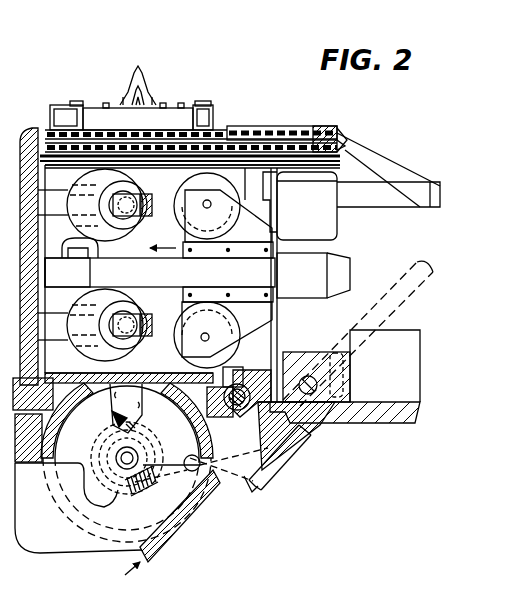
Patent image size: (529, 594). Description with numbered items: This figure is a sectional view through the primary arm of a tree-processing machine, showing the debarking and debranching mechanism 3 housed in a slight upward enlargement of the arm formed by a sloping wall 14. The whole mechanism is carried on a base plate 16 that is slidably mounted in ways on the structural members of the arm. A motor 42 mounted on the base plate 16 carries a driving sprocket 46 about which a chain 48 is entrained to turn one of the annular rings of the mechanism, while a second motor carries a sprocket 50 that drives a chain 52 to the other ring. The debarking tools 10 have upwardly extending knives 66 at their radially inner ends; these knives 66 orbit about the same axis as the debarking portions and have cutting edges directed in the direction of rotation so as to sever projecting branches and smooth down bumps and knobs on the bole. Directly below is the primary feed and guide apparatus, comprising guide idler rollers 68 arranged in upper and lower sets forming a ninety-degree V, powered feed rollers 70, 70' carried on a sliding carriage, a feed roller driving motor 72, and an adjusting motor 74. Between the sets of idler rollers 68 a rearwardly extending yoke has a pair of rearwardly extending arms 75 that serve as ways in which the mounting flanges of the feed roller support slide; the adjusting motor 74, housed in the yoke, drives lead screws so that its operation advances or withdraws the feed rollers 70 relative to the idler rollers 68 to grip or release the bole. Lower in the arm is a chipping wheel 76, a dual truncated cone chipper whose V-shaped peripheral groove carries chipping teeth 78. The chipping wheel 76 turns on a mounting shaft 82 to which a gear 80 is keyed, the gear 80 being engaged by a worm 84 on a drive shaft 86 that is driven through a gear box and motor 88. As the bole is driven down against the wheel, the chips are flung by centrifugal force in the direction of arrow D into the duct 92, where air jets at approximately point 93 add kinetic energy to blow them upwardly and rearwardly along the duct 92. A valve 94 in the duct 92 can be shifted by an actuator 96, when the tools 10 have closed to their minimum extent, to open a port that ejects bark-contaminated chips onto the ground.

The debarking and debranching mechanism 3 is at (183, 57).
The tools 10 is at (62, 103).
The knives 66 is at (138, 96).
The chain 52 is at (258, 153).
The chain 48 is at (273, 131).
The driving sprocket 46 is at (336, 137).
The sprocket 50 is at (348, 148).
The sloping wall 14 is at (387, 166).
The base plate 16 is at (333, 168).
The motor 42 is at (318, 221).
The guide idler rollers 68 is at (98, 228).
The powered feed rollers 70 is at (209, 333).
The upper cam plate 70' is at (223, 207).
The adjusting motor 74 is at (96, 256).
The rearwardly extending arms 75 is at (200, 281).
The feed roller driving motor 72 is at (346, 281).
The duct 92 is at (376, 313).
The motor 88 is at (422, 340).
The actuator 96 is at (303, 448).
The valve 94 is at (270, 484).
The point 93 is at (156, 554).
The chipping wheel 76 is at (84, 496).
The drive shaft 86 is at (213, 437).
The mounting shaft 82 is at (121, 456).
The gear 80 is at (113, 414).
The chipping teeth 78 is at (126, 408).
The worm 84 is at (147, 497).
The arrow D is at (217, 482).